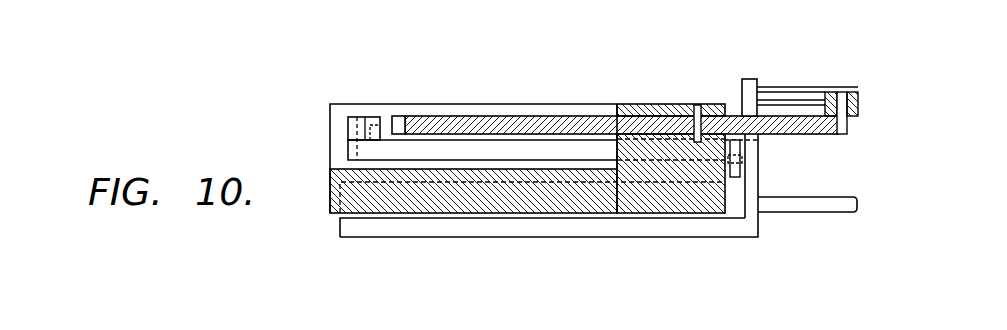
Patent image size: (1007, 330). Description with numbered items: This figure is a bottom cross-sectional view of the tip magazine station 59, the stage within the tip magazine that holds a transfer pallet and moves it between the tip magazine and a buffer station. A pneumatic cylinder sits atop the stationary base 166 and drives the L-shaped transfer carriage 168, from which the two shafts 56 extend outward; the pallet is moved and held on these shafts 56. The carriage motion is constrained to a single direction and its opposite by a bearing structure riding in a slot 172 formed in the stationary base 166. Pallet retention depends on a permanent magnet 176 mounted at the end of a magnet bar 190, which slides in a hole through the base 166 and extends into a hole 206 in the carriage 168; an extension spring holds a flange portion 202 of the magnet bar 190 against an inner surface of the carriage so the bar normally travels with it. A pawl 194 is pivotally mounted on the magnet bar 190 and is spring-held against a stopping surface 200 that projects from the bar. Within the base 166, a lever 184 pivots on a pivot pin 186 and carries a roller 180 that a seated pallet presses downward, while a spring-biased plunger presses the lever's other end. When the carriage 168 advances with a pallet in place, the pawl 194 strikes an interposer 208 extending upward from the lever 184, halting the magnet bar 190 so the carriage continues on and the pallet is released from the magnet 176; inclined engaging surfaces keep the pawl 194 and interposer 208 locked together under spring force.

The tip magazine station 59 is at (531, 86).
The shafts 56 is at (840, 197).
The stationary base 166 is at (656, 105).
The transfer carriage 168 is at (748, 79).
The slot 172 is at (337, 217).
The permanent magnet 176 is at (745, 163).
The roller 180 is at (832, 91).
The lever 184 is at (474, 117).
The pivot pin 186 is at (697, 105).
The magnet bar 190 is at (347, 150).
The pawl 194 is at (347, 128).
The stopping surface 200 is at (377, 120).
The flange portion 202 is at (738, 160).
The hole 206 is at (742, 172).
The interposer 208 is at (411, 122).